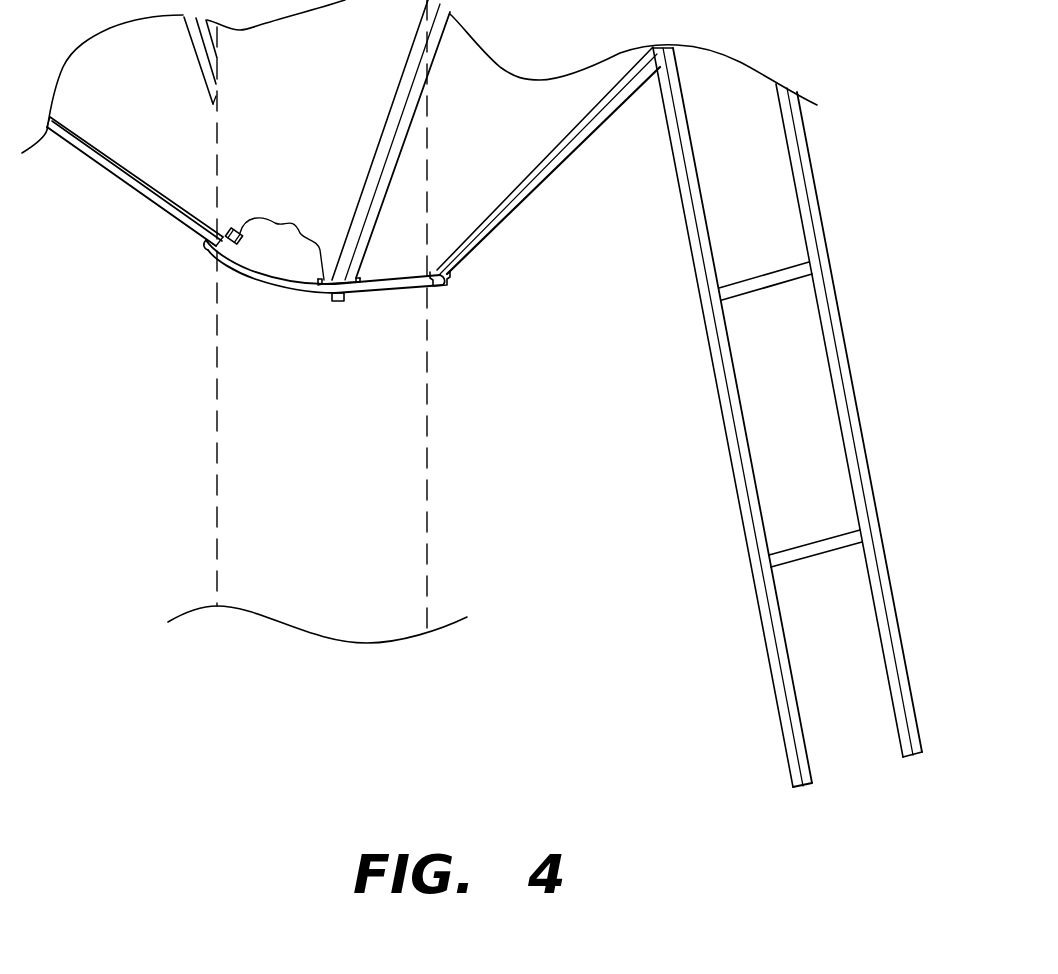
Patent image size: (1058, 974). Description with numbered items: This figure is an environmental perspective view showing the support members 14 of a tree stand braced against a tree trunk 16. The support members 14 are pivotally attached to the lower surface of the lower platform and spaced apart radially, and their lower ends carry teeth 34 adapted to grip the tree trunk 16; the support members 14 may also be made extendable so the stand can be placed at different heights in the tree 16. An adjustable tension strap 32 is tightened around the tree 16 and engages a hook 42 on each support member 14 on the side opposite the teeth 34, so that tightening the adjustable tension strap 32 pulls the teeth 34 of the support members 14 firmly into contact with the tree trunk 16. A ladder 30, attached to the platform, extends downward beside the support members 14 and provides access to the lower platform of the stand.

The support members 14 is at (110, 177).
The tree trunk 16 is at (428, 488).
The ladder 30 is at (738, 485).
The adjustable tension strap 32 is at (384, 292).
The teeth 34 is at (282, 234).
The hook 42 is at (207, 243).